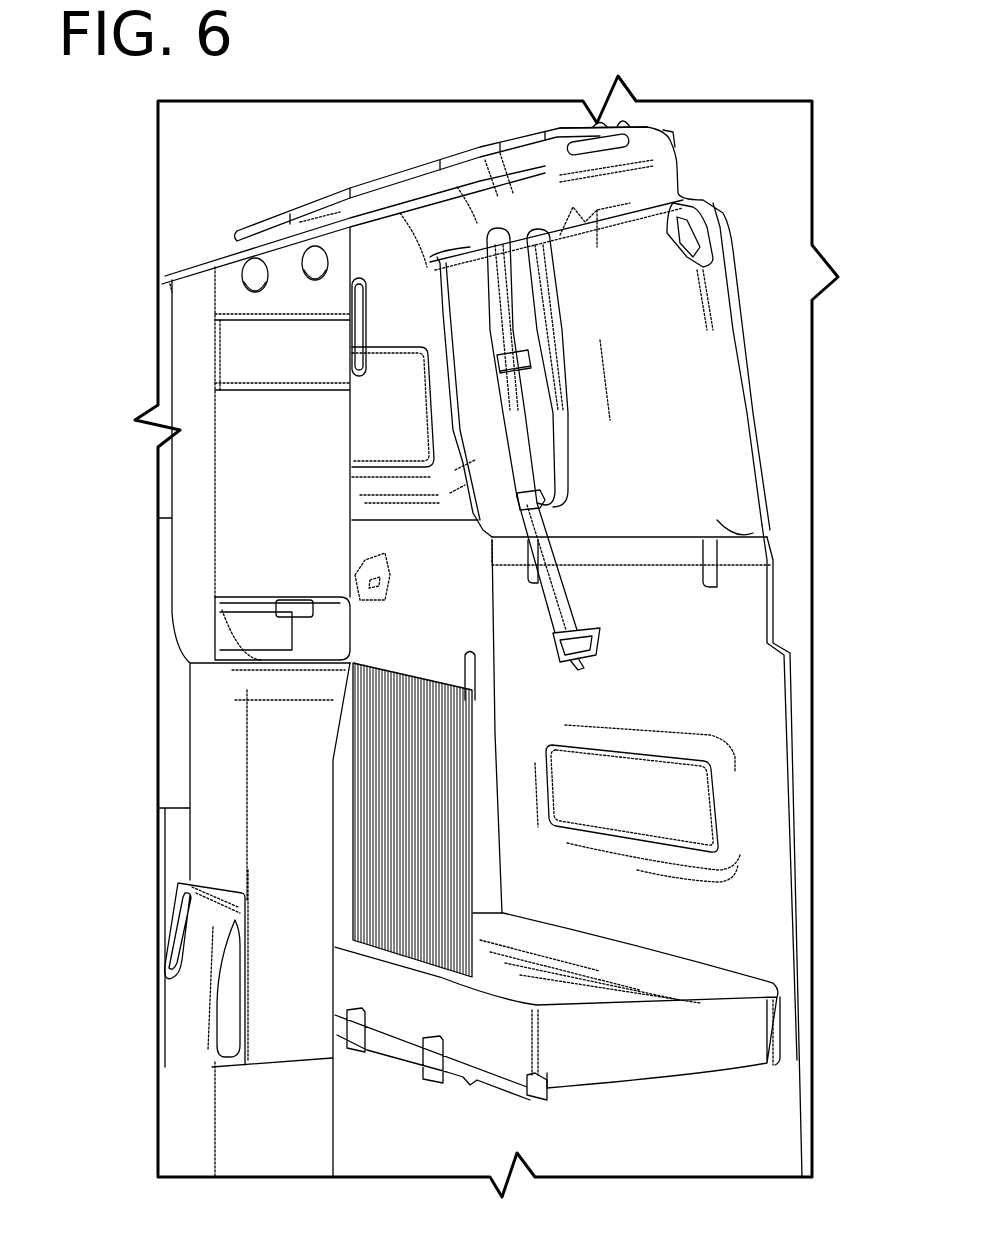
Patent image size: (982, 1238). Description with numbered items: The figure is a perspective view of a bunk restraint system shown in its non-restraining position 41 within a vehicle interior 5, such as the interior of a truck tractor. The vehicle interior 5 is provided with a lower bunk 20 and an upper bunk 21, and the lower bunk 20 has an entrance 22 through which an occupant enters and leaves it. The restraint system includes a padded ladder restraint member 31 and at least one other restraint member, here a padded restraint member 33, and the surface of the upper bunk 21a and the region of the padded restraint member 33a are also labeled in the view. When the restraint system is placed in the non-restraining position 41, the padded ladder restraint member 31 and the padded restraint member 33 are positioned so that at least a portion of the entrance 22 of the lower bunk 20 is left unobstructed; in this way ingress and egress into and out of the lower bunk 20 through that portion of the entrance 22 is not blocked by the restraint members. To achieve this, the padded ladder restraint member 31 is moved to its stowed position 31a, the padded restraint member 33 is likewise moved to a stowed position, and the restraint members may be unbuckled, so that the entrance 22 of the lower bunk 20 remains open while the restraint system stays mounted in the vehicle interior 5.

The vehicle interior 5 is at (182, 720).
The lower bunk 20 is at (595, 1005).
The upper bunk 21 is at (580, 280).
The seat back surface 21a is at (597, 360).
The entrance 22 is at (420, 917).
The padded ladder restraint member 31 is at (520, 500).
The stowed position 31a is at (553, 440).
The padded restraint member 33 is at (643, 795).
The opening inner edge 33a is at (697, 795).
The non-restraining position 41 is at (543, 648).